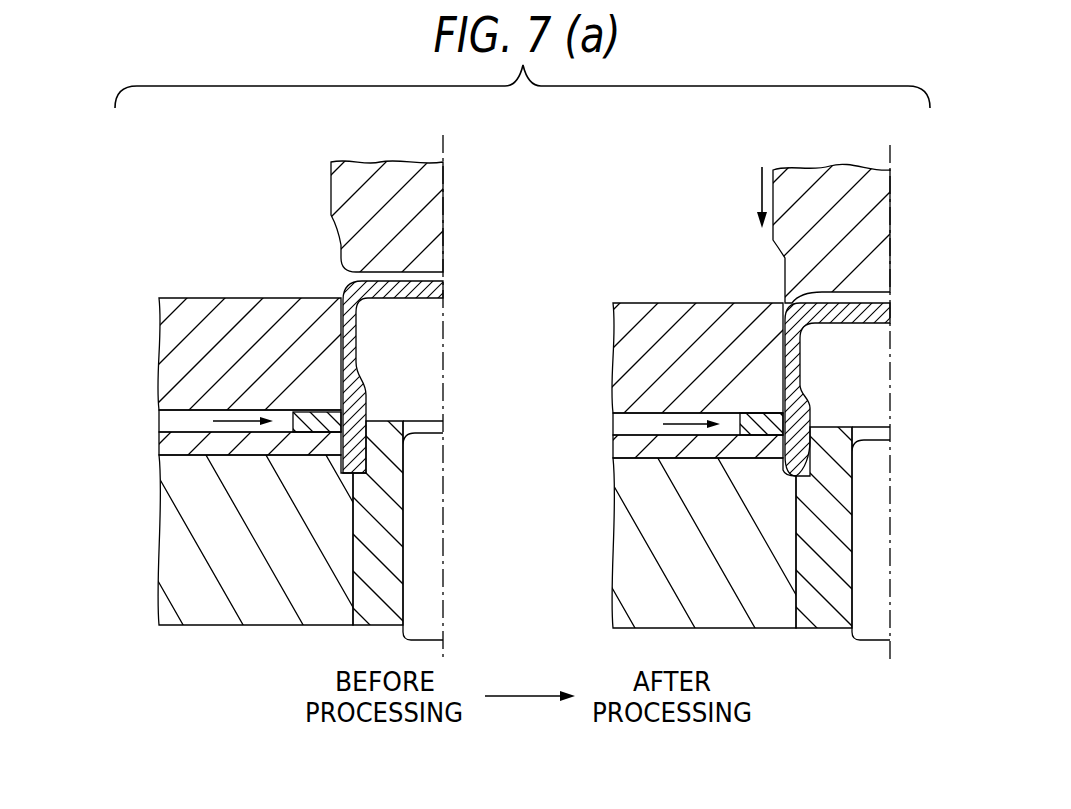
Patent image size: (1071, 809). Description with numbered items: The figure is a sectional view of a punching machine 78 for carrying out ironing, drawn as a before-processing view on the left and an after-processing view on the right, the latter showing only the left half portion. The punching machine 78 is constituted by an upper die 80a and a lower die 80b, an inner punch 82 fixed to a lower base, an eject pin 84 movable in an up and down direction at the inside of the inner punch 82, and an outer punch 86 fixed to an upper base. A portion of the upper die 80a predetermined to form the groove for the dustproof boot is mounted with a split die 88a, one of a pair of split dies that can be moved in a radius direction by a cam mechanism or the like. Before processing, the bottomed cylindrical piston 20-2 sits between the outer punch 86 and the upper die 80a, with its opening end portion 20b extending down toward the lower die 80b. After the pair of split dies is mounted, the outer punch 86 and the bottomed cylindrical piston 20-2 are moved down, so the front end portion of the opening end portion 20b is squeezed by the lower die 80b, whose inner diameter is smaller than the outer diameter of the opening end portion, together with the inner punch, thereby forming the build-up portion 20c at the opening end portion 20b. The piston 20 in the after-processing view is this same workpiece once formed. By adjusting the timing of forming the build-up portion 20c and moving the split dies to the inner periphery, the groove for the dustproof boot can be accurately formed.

The punching machine 78 is at (280, 186).
The outer punch 86 is at (418, 229).
The bottomed cylindrical piston 20-2 is at (345, 353).
The metal sheet (shield case) 20 is at (792, 353).
The upper die 80a is at (165, 352).
The split die 88a is at (318, 410).
The lower die 80b is at (175, 536).
The opening end portion 20b is at (350, 457).
The build-up portion 20c is at (796, 464).
The inner punch 82 is at (412, 548).
The eject pin 84 is at (435, 600).